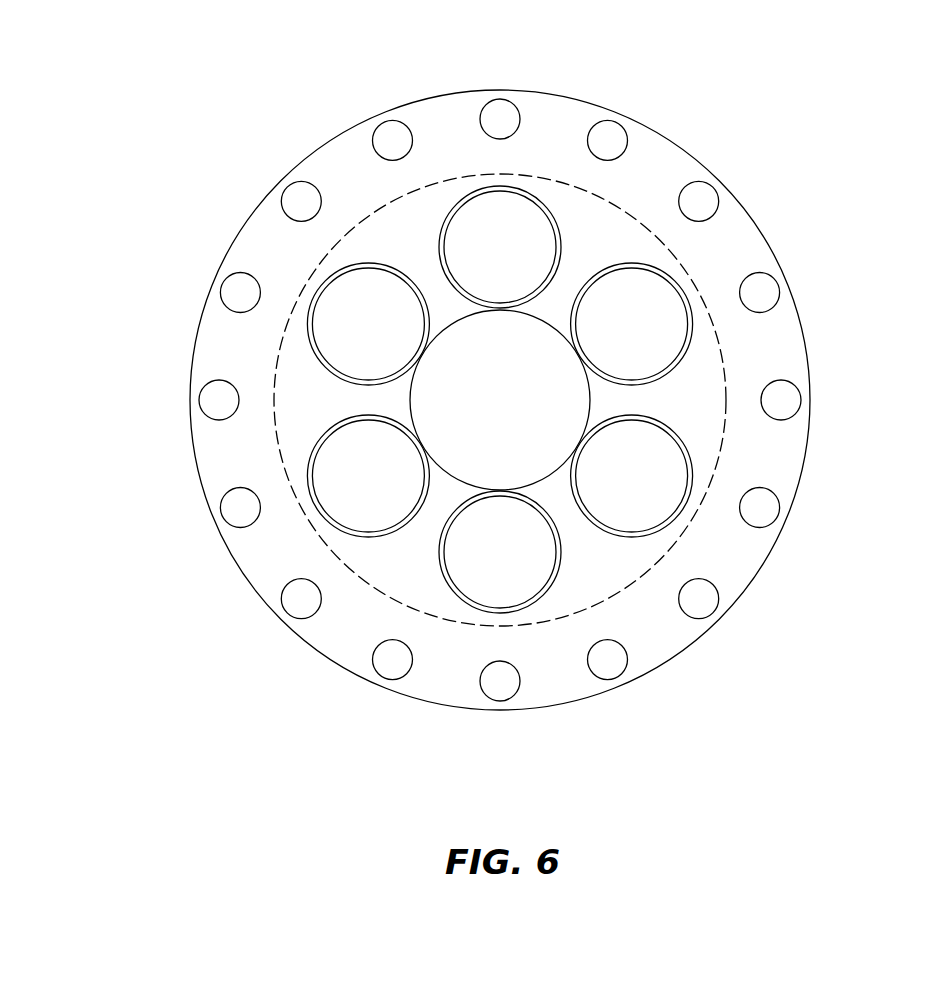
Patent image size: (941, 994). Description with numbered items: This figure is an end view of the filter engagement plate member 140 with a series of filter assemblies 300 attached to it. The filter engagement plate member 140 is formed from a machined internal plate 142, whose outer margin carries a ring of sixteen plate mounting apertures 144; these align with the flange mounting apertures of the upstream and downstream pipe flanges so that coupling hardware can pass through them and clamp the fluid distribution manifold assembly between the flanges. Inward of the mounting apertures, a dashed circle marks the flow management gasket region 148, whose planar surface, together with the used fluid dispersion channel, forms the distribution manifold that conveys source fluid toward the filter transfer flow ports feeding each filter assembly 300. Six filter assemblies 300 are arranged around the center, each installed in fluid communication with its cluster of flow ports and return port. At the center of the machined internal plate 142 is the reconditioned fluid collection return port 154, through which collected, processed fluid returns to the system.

The filter engagement plate member 140 is at (250, 121).
The machined internal plate 142 is at (810, 398).
The plate mounting apertures 144 is at (704, 604).
The flow management gasket region 148 is at (608, 242).
The reconditioned fluid collection return port 154 is at (521, 414).
The filter assembly 300 is at (665, 492).